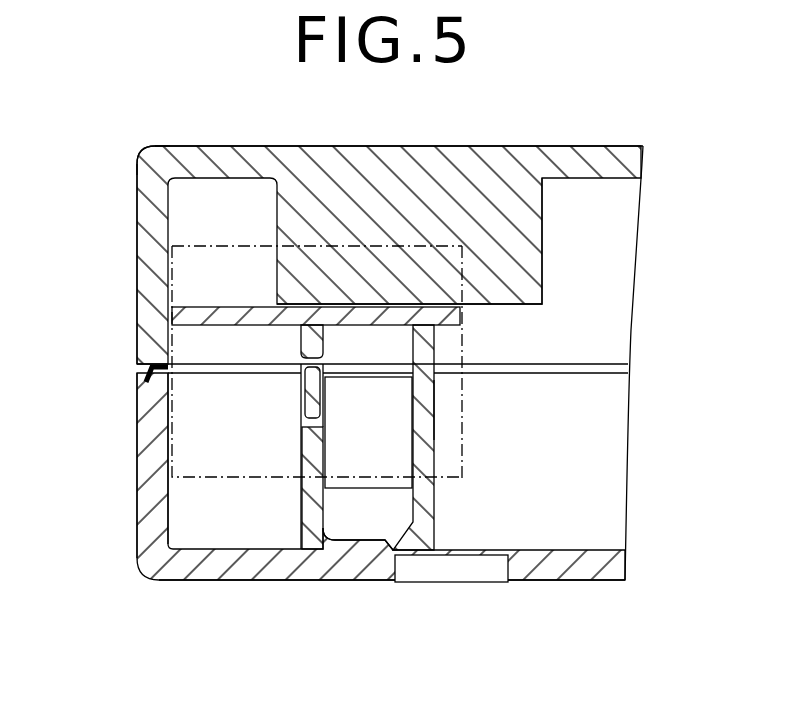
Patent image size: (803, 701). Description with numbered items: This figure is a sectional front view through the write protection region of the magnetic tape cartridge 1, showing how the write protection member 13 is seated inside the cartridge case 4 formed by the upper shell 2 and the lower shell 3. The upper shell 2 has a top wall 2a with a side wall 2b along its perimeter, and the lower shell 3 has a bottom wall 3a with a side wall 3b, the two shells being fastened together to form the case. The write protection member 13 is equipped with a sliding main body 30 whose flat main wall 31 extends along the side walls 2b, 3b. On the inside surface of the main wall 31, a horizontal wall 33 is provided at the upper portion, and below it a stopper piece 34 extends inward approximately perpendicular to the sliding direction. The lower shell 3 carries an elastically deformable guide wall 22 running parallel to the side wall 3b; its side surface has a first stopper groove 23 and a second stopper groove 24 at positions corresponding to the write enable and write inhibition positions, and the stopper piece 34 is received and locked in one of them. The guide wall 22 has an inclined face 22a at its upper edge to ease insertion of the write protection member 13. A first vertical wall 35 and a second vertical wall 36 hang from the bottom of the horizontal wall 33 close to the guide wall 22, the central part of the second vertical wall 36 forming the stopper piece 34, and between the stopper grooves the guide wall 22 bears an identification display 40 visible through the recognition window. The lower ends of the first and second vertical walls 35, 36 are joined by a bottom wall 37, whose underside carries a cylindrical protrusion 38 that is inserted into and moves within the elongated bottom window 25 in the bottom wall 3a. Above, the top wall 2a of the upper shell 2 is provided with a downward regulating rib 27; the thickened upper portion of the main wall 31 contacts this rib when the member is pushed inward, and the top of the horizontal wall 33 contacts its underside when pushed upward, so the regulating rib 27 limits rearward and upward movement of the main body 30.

The magnetic tape cartridge 1 is at (457, 108).
The upper shell 2 is at (633, 273).
The top wall 2a is at (585, 147).
The side wall 2b is at (140, 255).
The lower shell 3 is at (623, 465).
The bottom wall 3a is at (580, 577).
The side wall 3b is at (142, 488).
The cartridge case 4 is at (142, 146).
The write protection member 13 is at (207, 242).
The guide wall 22 is at (203, 362).
The inclined face 22a is at (545, 373).
The first stopper groove 23 is at (302, 418).
The second stopper groove 24 is at (437, 413).
The bottom window 25 is at (462, 572).
The regulating rib 27 is at (530, 230).
The sliding main body 30 is at (462, 456).
The main wall 31 is at (184, 407).
The horizontal wall 33 is at (212, 300).
The stopper piece 34 is at (310, 392).
The first vertical wall 35 is at (432, 510).
The second vertical wall 36 is at (303, 505).
The bottom wall 37 is at (282, 580).
The protrusion 38 is at (365, 570).
The identification display 40 is at (403, 458).